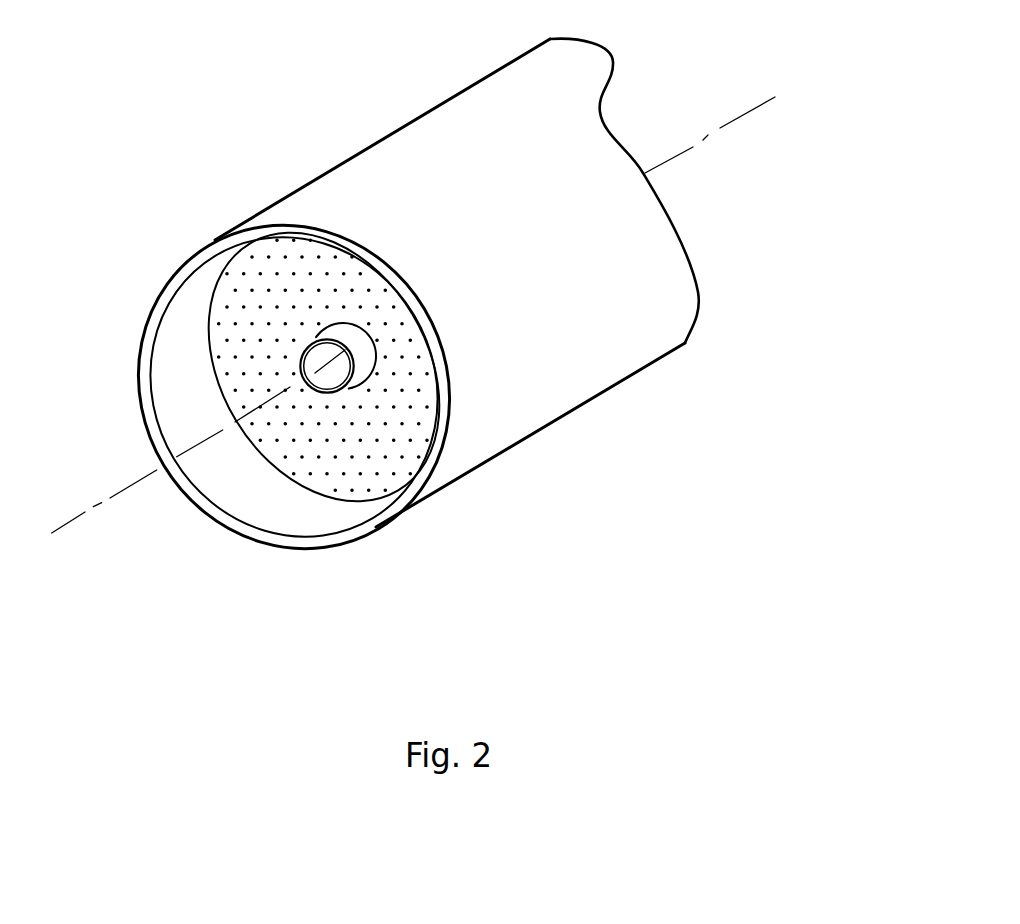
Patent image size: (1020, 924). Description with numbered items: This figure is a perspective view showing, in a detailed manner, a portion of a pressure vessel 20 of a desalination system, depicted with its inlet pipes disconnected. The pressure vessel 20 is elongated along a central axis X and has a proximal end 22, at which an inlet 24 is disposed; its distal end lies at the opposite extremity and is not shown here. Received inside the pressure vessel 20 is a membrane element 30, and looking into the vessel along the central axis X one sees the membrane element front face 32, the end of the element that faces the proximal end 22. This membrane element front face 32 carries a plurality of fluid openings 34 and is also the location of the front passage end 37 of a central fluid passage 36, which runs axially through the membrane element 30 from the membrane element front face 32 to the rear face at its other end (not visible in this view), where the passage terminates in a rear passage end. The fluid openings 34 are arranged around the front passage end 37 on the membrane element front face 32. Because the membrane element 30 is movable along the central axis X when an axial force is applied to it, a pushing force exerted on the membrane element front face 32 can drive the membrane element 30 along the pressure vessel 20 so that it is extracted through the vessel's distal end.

The pressure vessel 20 is at (480, 80).
The proximal end 22 is at (333, 170).
The inlet 24 is at (187, 258).
The membrane element 30 is at (225, 273).
The membrane element front face 32 is at (352, 482).
The fluid openings 34 is at (268, 288).
The central fluid passage 36 is at (352, 388).
The front passage end 37 is at (368, 342).
The central axis X is at (738, 115).